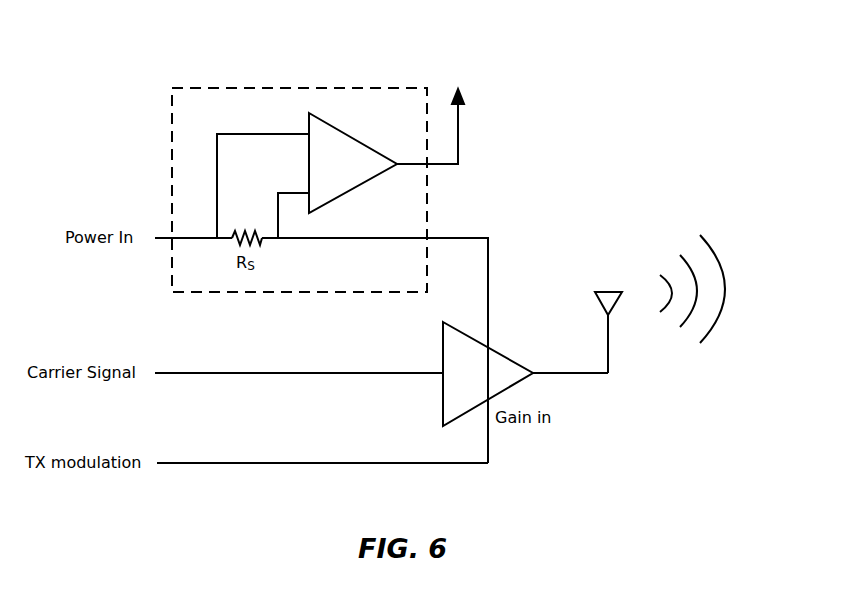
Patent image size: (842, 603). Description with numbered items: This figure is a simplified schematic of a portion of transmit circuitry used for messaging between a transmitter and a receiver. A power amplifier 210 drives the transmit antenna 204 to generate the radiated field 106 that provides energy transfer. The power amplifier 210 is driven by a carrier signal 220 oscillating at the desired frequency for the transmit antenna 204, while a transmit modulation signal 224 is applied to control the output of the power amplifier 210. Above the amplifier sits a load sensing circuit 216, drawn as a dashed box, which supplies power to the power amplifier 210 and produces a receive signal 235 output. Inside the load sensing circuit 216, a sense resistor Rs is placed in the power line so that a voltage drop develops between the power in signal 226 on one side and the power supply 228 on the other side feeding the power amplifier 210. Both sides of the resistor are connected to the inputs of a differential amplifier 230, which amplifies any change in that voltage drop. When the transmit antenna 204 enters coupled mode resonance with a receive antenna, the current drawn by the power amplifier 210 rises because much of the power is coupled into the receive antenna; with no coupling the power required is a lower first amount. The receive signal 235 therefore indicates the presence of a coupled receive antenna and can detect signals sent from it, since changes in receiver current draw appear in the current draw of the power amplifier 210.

The radiated field 106 is at (691, 217).
The transmit antenna 204 is at (595, 293).
The power amplifier 210 is at (507, 358).
The load sensing circuit 216 is at (276, 88).
The carrier signal 220 is at (203, 373).
The transmit modulation signal 224 is at (227, 463).
The power in signal 226 is at (212, 242).
The power supply 228 is at (322, 242).
The differential amplifier 230 is at (366, 183).
The receive signal 235 is at (458, 133).